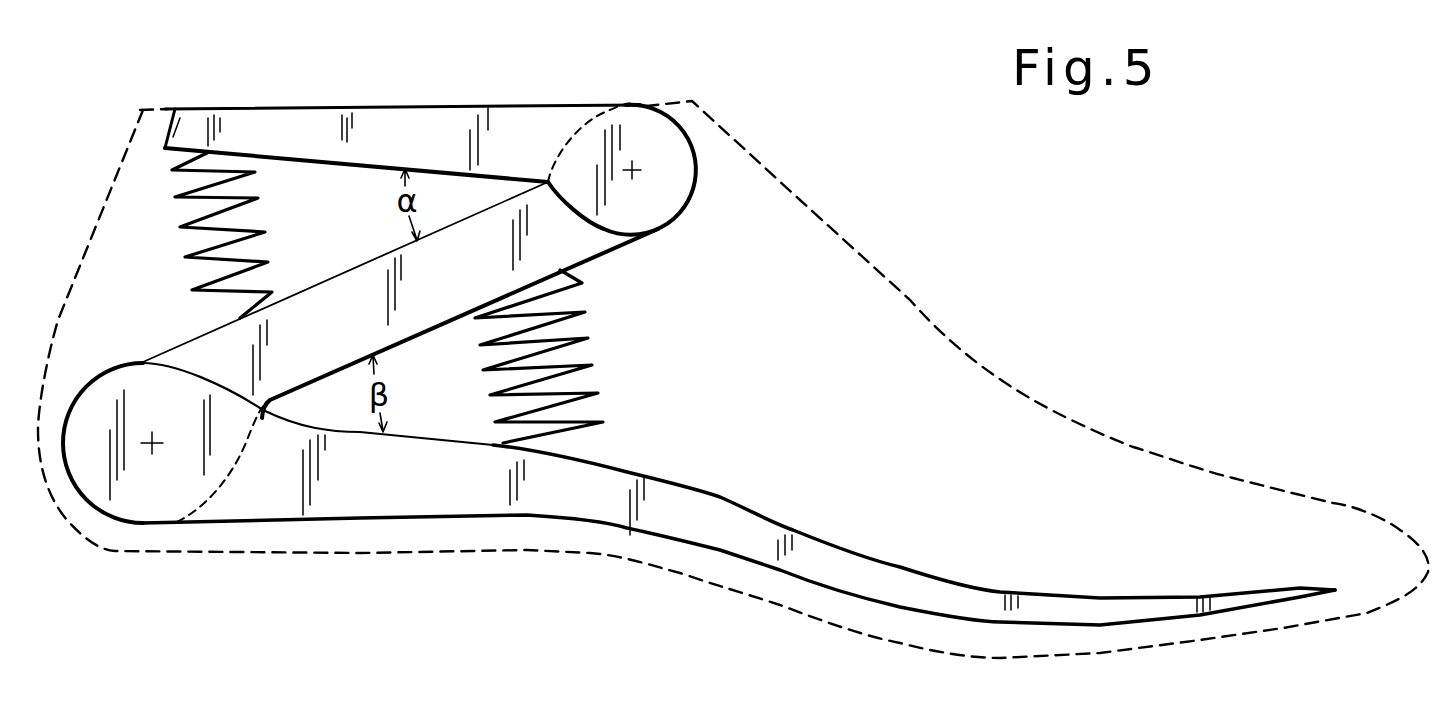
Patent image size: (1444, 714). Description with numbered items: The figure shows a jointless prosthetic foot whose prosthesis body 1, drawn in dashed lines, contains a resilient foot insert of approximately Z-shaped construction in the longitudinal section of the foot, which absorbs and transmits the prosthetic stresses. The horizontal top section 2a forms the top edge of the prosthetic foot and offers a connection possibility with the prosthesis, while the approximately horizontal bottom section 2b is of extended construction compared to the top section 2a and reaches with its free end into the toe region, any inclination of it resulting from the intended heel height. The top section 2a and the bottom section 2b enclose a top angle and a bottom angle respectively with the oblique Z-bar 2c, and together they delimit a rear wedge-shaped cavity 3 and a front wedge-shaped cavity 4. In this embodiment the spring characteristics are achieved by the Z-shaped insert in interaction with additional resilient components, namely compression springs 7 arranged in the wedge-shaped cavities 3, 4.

The prosthesis body 1 is at (927, 316).
The top section 2a is at (435, 140).
The bottom section 2b is at (482, 483).
The oblique Z-bar 2c is at (440, 278).
The rear wedge-shaped cavity 3 is at (327, 220).
The front wedge-shaped cavity 4 is at (428, 390).
The compression springs 7 is at (237, 195).